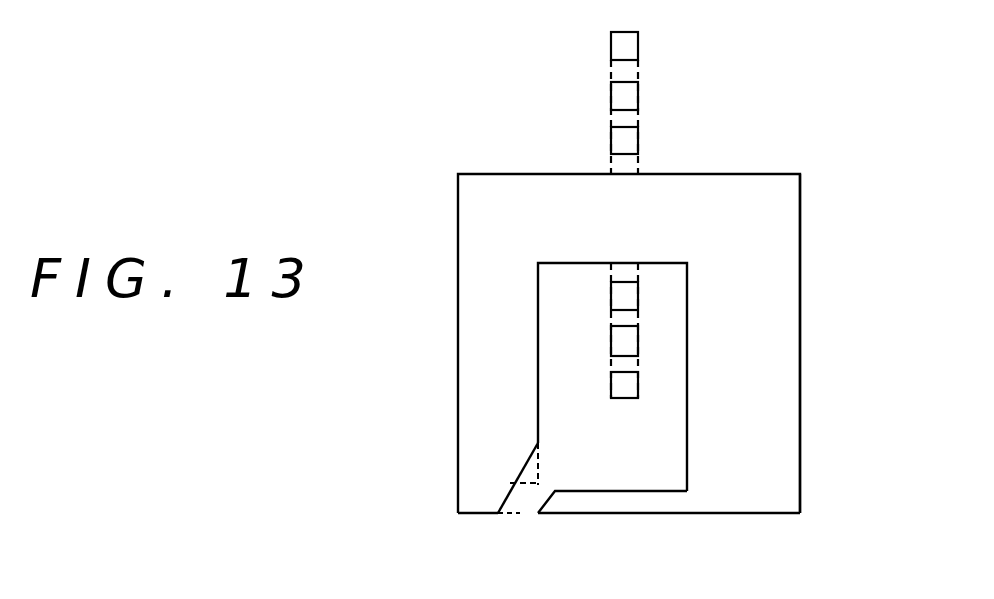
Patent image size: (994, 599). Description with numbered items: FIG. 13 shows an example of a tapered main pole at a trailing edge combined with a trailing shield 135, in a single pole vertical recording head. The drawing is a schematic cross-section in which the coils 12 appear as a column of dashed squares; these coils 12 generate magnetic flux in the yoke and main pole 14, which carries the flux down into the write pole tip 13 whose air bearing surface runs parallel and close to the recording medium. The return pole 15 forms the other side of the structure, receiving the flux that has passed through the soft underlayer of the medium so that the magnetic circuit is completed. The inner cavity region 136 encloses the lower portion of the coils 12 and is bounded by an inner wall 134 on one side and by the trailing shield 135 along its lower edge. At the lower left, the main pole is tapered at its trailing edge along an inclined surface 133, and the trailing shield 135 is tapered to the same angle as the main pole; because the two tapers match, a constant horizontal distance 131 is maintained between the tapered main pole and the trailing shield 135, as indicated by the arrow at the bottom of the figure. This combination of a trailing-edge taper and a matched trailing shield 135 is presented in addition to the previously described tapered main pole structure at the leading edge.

The coils 12 is at (628, 45).
The write pole tip 13 is at (478, 482).
The yoke / main pole 14 is at (492, 354).
The return pole 15 is at (783, 345).
The horizontal distance 131 is at (515, 522).
The inclined guide surface 133 is at (512, 493).
The side wall of cavity 134 is at (538, 481).
The trailing shield 135 is at (651, 502).
The cavity 136 is at (663, 362).